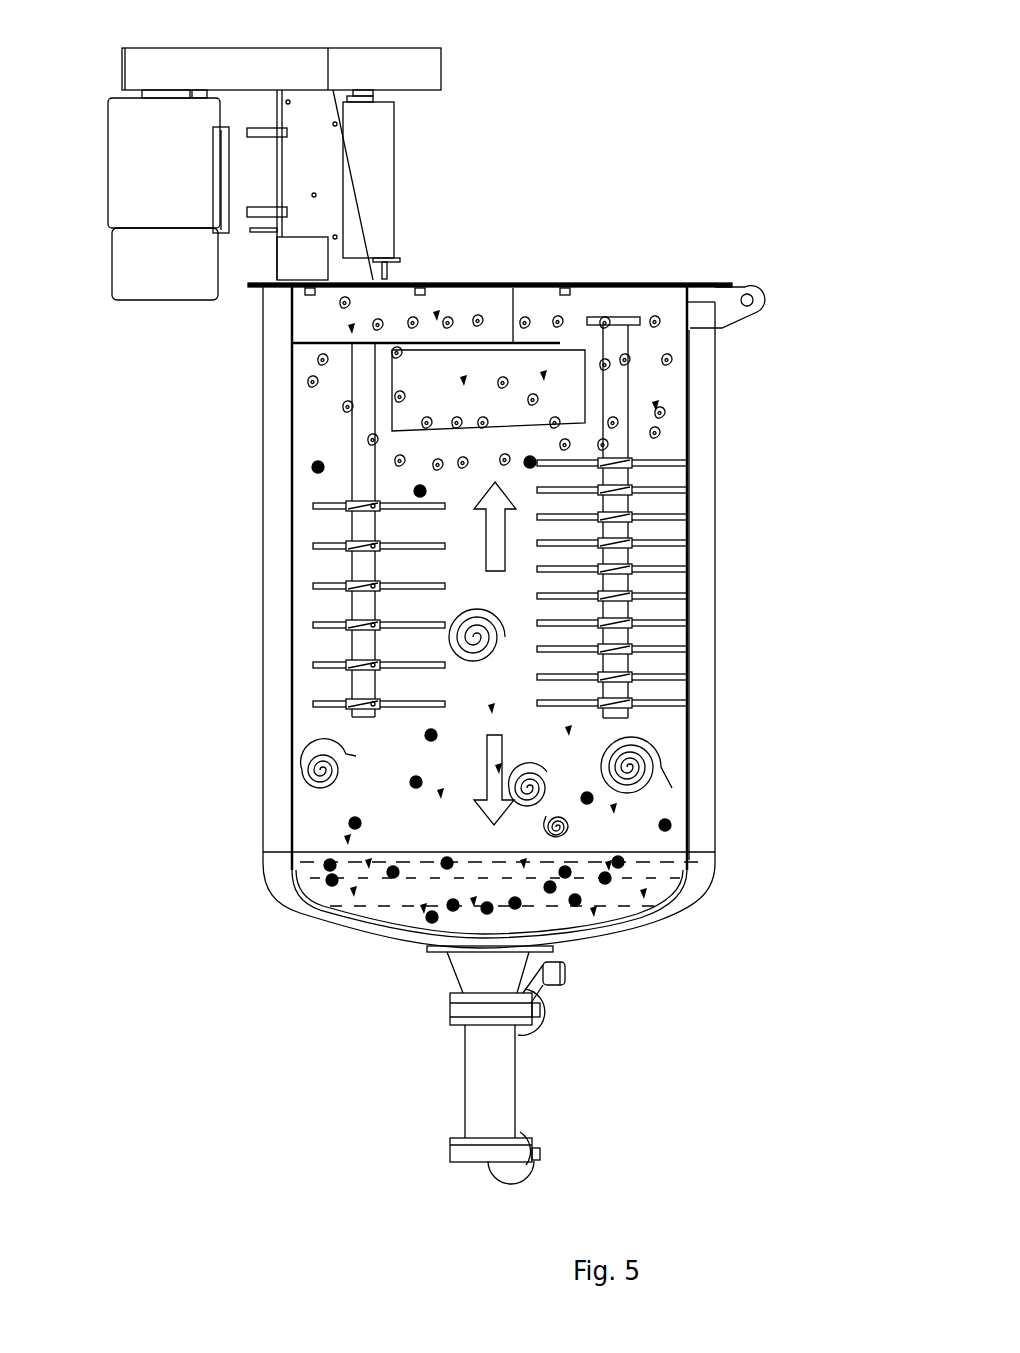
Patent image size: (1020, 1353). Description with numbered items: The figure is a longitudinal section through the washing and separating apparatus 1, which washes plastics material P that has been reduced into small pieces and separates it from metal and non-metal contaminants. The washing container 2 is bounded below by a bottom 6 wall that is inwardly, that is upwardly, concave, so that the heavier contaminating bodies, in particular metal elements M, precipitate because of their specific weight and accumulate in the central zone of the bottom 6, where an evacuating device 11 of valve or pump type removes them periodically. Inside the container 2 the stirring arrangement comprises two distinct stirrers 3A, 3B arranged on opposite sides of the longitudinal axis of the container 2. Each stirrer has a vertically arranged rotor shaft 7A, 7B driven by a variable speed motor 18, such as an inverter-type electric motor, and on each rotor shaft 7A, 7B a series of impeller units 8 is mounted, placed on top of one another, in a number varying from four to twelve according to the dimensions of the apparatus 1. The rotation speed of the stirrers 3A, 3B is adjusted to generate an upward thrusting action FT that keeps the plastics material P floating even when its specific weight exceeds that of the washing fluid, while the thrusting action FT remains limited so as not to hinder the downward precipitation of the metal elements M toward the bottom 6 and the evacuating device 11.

The washing and separating apparatus 1 is at (621, 122).
The variable speed motor 18 is at (142, 202).
The washing container 2 is at (268, 745).
The bottom wall 6 is at (635, 912).
The impeller units 8 is at (699, 681).
The first stirrer 3A is at (365, 567).
The first rotor shaft 7A is at (363, 478).
The second stirrer 3B is at (637, 600).
The second rotor shaft 7B is at (615, 505).
The thrusting action FT is at (500, 540).
The plastics material P is at (680, 363).
The metal elements M is at (387, 877).
The evacuating device 11 is at (426, 1056).